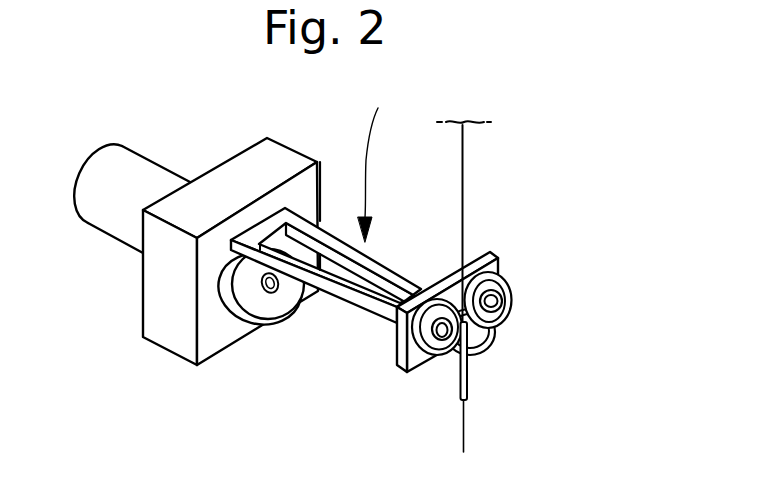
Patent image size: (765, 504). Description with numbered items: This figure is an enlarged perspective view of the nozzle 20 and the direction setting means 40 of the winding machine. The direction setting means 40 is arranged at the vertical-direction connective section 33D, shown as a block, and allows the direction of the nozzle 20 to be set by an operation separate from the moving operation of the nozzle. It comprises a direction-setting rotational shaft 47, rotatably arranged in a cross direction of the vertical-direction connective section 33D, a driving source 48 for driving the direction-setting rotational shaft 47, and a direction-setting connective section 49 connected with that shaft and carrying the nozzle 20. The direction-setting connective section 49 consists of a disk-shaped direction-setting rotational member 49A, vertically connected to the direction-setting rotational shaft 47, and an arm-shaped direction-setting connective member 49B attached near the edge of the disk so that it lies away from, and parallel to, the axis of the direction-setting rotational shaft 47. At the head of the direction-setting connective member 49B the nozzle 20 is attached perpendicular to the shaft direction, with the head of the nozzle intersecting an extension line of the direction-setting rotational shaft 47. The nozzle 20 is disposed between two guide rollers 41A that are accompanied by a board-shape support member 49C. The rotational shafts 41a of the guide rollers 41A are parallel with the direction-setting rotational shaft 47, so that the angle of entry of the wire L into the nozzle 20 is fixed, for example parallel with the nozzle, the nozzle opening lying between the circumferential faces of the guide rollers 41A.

The direction setting means 40 is at (377, 162).
The wire L is at (462, 196).
The guide rollers 41A is at (507, 283).
The rotational shafts of guide rollers 41a is at (508, 325).
The nozzle 20 is at (467, 380).
The driving source 48 is at (128, 213).
The vertical-direction connective section 33D is at (160, 283).
The direction-setting rotational shaft 47 is at (222, 303).
The direction-setting connective section 49 is at (324, 351).
The direction-setting rotational member 49A is at (258, 316).
The direction-setting connective member 49B is at (325, 293).
The board shape support member 49C is at (417, 359).